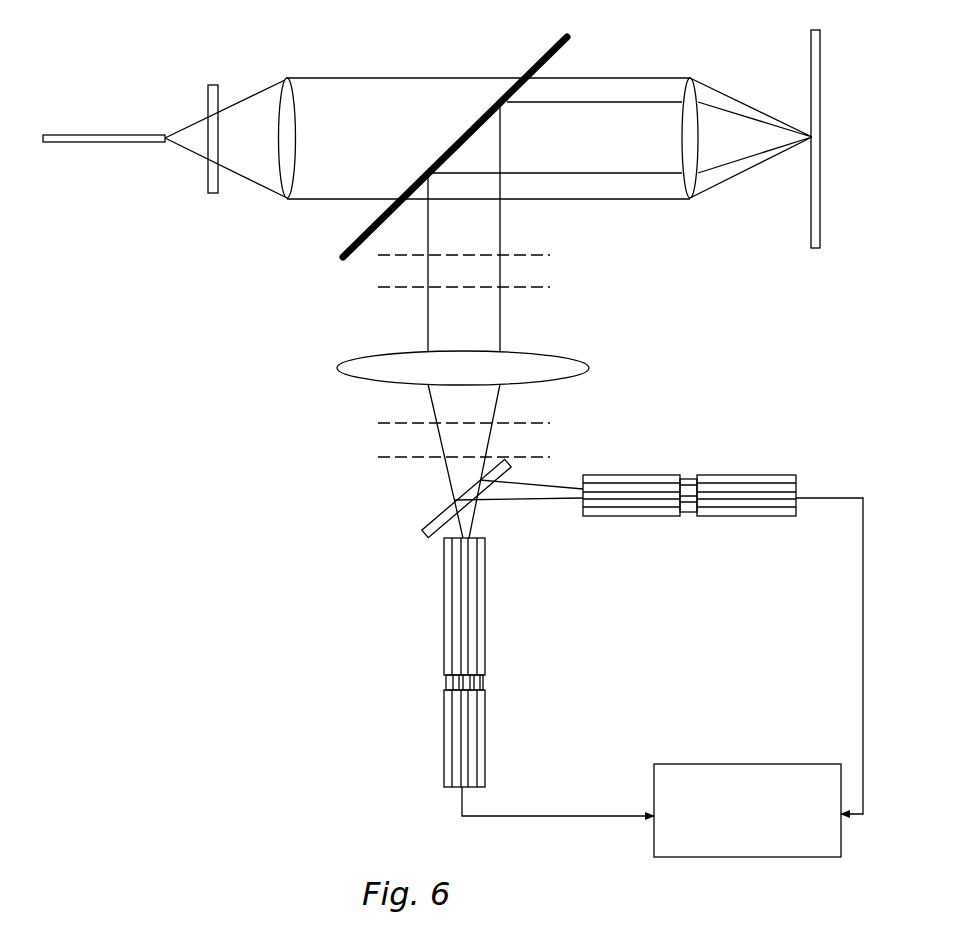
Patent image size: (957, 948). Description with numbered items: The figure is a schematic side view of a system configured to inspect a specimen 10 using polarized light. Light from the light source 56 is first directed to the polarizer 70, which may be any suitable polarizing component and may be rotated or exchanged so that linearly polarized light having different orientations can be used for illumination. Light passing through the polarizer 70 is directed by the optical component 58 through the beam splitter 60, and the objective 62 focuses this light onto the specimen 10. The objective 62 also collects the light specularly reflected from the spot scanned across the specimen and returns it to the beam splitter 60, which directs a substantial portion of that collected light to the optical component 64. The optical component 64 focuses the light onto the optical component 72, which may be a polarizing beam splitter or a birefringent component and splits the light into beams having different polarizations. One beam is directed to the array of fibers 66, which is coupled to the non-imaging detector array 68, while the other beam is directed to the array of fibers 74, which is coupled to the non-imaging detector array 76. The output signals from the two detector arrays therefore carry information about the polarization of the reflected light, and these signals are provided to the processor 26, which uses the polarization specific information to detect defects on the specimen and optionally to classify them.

The specimen 10 is at (820, 62).
The processor 26 is at (747, 810).
The light source 56 is at (100, 135).
The optical component 58 is at (283, 80).
The beam splitter 60 is at (547, 48).
The objective 62 is at (692, 90).
The optical component 64 is at (572, 360).
The array of fibers 66 is at (485, 590).
The non-imaging detector array 68 is at (485, 728).
The polarizer 70 is at (208, 90).
The optical component 72 is at (433, 520).
The array of fibers 74 is at (638, 475).
The non-imaging detector array 76 is at (752, 475).